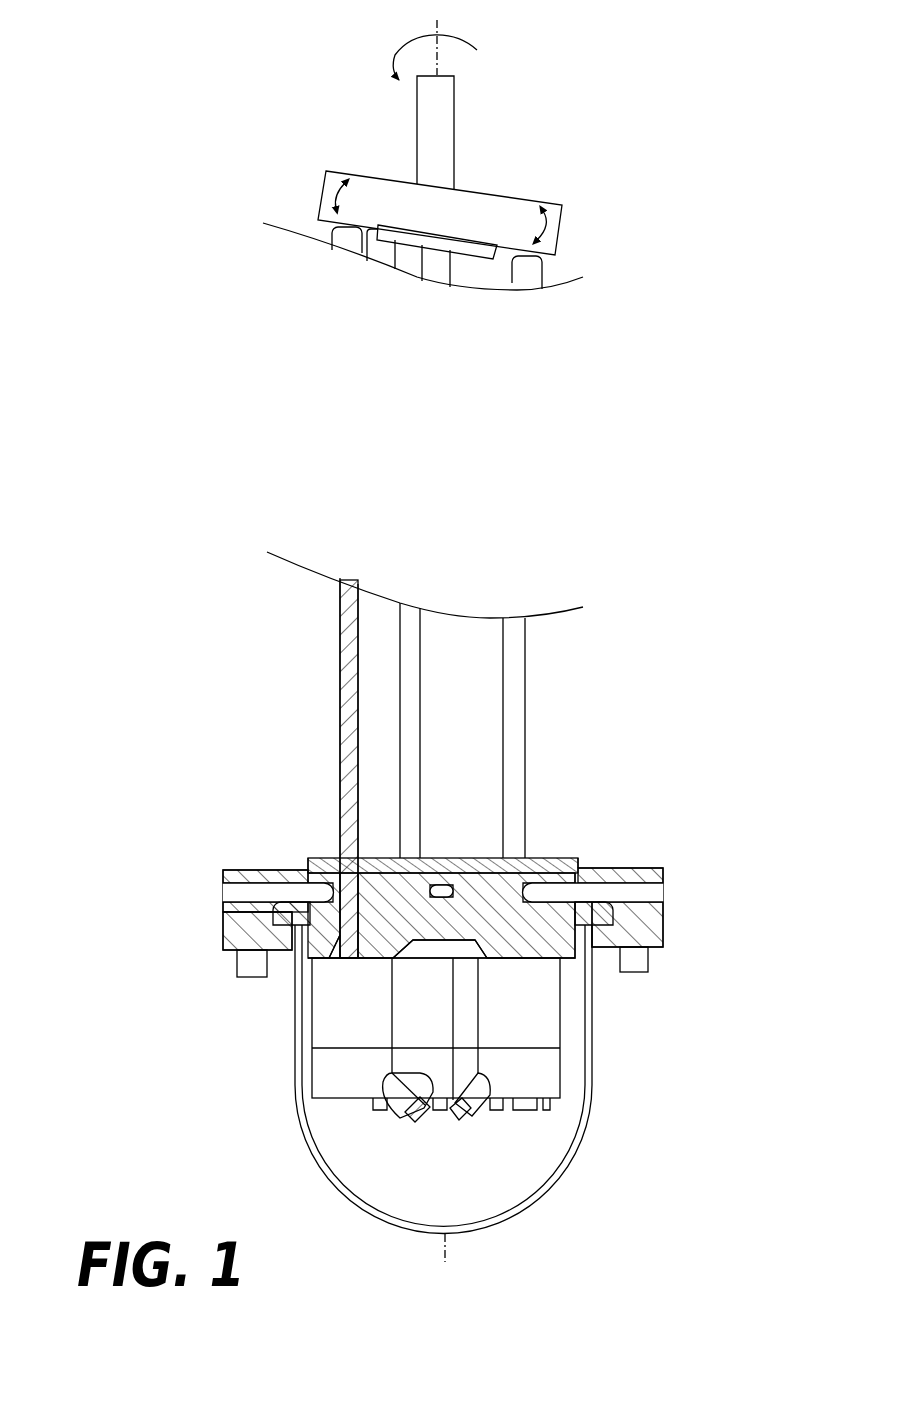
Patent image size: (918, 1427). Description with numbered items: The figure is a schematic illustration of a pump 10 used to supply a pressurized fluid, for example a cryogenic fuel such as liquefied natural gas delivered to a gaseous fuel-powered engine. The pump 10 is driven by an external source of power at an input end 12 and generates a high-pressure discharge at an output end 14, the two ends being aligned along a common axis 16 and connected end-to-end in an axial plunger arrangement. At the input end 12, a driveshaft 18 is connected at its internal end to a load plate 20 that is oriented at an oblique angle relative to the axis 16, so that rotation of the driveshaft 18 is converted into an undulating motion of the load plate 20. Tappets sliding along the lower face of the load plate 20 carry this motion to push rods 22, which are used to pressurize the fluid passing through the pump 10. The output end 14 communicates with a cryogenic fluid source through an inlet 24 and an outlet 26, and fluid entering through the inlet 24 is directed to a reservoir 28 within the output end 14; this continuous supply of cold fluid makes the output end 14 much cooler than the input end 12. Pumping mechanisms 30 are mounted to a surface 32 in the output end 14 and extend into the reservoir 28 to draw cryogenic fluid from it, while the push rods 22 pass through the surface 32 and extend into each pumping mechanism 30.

The pump 10 is at (782, 131).
The input end 12 is at (191, 224).
The output end 14 is at (113, 811).
The common axis 16 is at (437, 25).
The driveshaft 18 is at (442, 137).
The load plate 20 is at (453, 222).
The push rod 22 is at (346, 727).
The inlet 24 is at (211, 885).
The outlet 26 is at (686, 881).
The reservoir 28 is at (458, 1186).
The pumping mechanism 30 is at (365, 1027).
The surface 32 is at (572, 966).